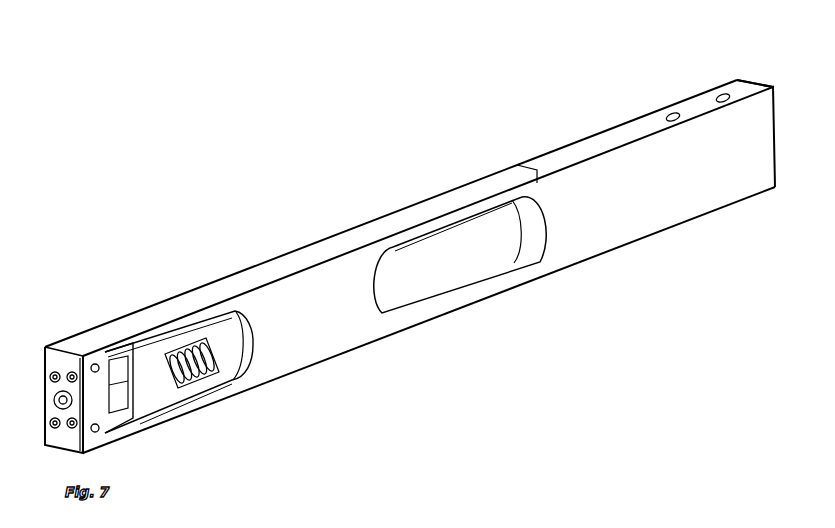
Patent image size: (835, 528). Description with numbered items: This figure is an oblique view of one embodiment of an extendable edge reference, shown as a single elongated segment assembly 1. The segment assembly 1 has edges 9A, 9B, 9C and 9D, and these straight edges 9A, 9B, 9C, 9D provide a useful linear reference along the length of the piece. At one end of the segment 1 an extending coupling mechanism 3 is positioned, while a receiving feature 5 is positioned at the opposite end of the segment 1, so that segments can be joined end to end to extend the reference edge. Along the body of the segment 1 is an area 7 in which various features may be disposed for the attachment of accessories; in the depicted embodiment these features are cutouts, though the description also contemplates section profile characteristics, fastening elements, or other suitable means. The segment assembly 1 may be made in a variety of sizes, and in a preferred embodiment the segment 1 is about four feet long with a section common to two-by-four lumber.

The segment assembly 1 is at (220, 293).
The extending coupling mechanism 3 is at (136, 413).
The receiving feature 5 is at (753, 83).
The area for the attachment of accessories 7 is at (443, 258).
The edge 9A is at (407, 213).
The edge 9B is at (525, 163).
The edge 9C is at (380, 342).
The edge 9D is at (43, 448).